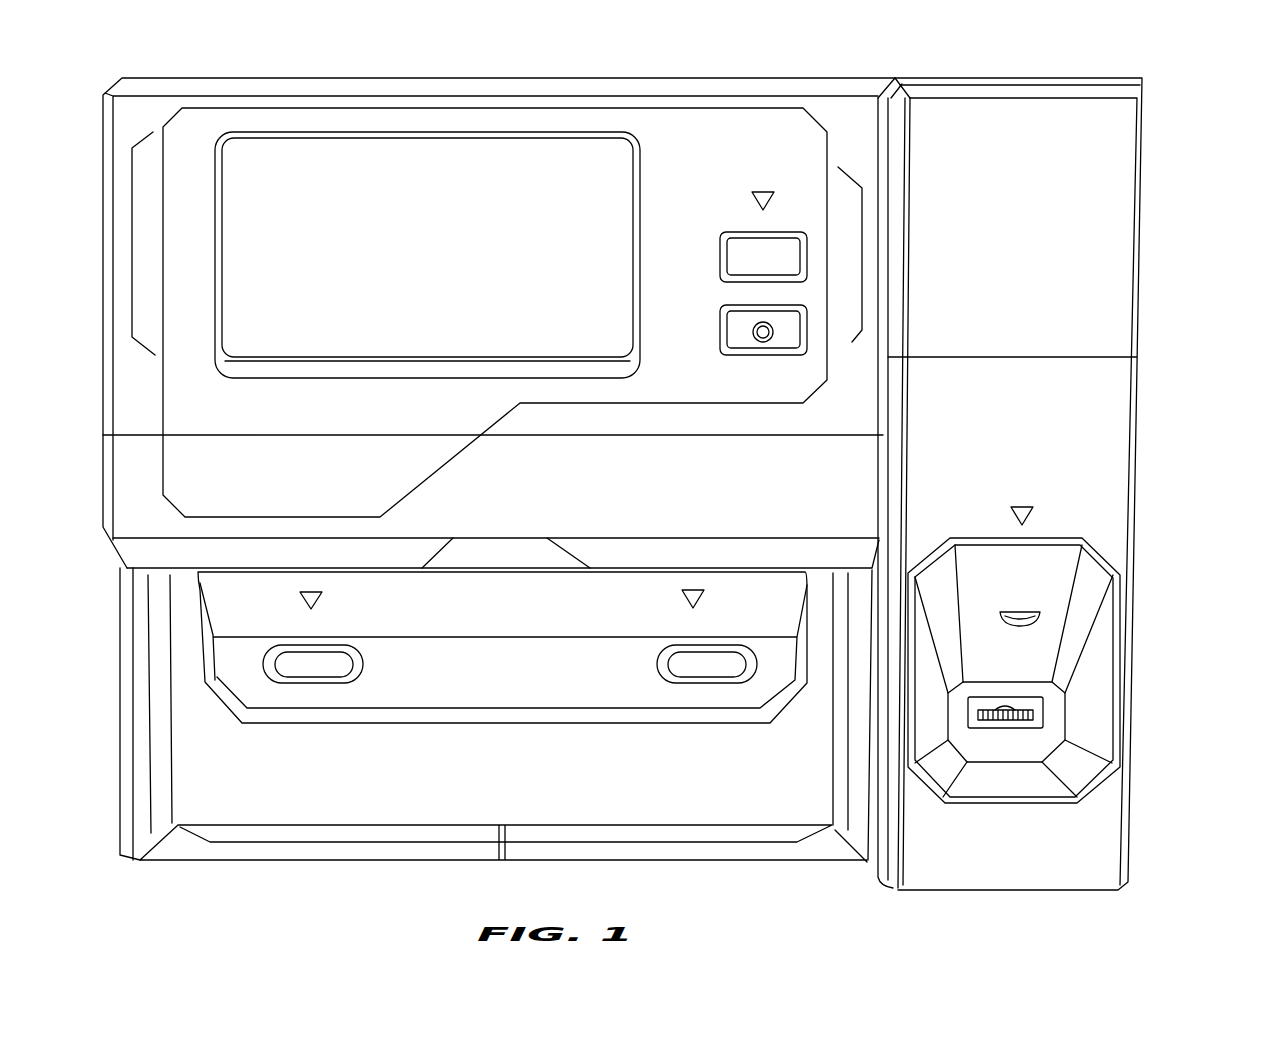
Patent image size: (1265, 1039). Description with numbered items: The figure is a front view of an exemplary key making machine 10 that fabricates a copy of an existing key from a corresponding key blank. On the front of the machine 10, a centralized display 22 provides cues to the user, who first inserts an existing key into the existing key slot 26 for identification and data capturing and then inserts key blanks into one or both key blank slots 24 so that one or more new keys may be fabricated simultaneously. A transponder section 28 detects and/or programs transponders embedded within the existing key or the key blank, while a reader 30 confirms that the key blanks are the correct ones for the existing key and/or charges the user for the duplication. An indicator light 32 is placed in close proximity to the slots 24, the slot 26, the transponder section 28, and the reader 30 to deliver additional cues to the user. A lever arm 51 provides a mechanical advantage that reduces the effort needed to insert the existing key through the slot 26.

The key making machine 10 is at (622, 484).
The centralized display 22 is at (132, 245).
The key blank slots 24 is at (310, 683).
The existing key slot 26 is at (982, 723).
The transponder section 28 is at (863, 260).
The reader 30 is at (537, 548).
The indicator light 32 is at (763, 192).
The lever arm 51 is at (1016, 612).